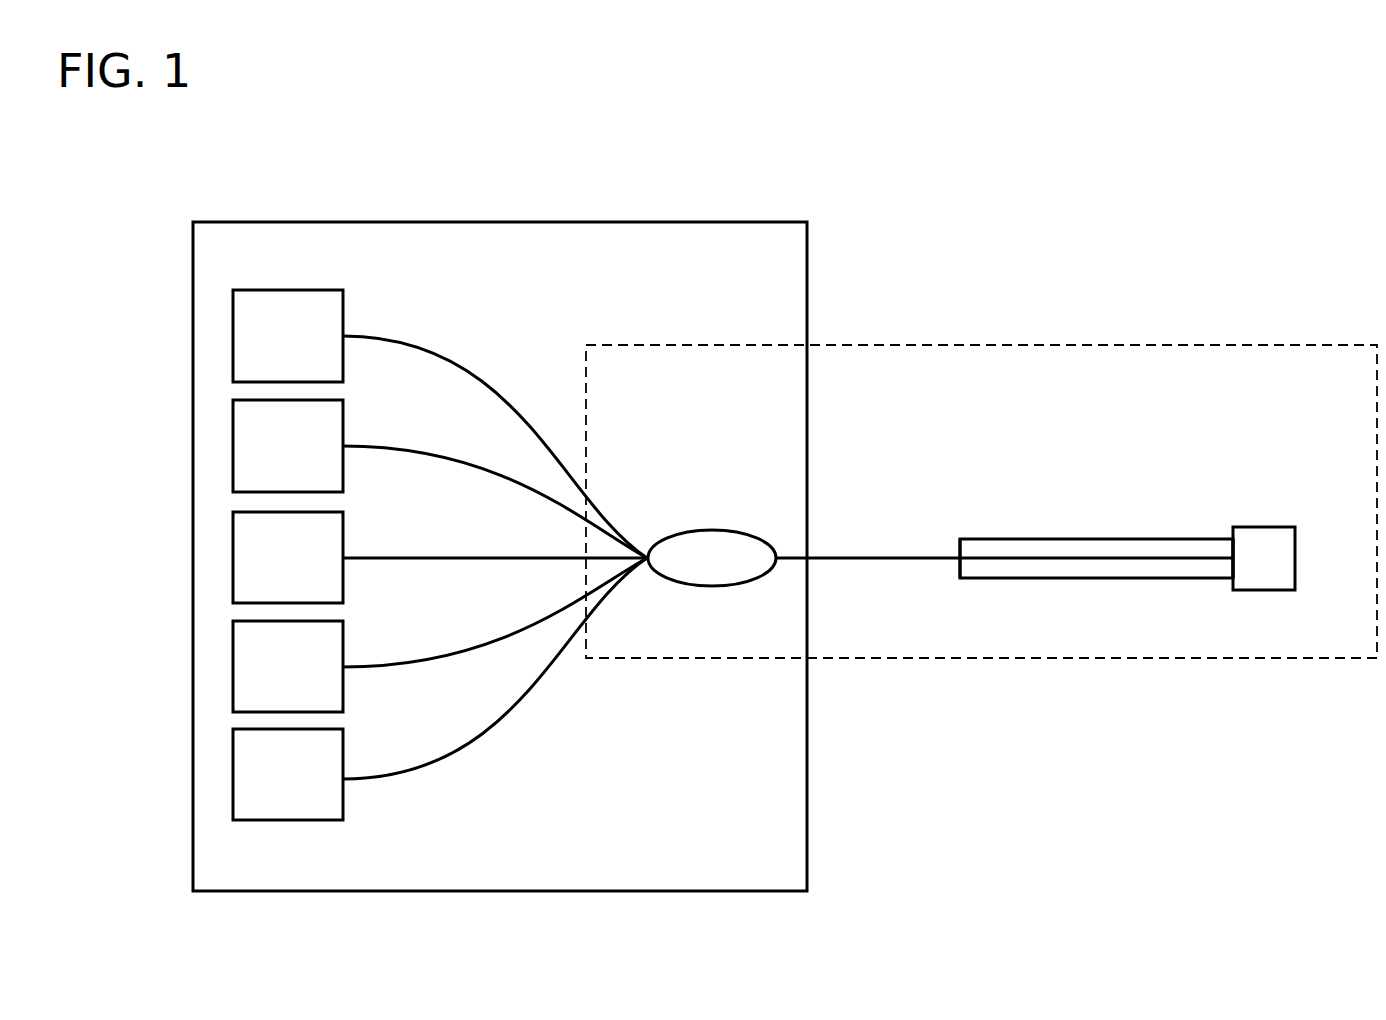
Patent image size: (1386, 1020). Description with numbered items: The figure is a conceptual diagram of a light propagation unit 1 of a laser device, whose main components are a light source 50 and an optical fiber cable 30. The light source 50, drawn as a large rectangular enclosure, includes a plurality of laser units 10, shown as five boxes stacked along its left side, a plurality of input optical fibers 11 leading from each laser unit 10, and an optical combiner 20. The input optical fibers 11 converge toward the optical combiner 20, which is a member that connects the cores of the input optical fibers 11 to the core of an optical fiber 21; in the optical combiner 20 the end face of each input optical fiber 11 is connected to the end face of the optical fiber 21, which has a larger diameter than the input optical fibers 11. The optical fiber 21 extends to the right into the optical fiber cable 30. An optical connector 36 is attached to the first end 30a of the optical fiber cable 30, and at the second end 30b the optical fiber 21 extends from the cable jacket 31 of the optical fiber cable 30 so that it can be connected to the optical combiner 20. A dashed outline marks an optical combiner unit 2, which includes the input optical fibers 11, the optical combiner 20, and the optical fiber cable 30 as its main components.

The light propagation unit 1 is at (1227, 212).
The optical combiner unit 2 is at (988, 345).
The laser unit 10 is at (233, 334).
The input optical fiber 11 is at (378, 335).
The optical combiner 20 is at (713, 530).
The optical fiber 21 is at (845, 556).
The optical fiber cable 30 is at (1122, 506).
The first end 30a is at (1215, 580).
The second end 30b is at (974, 580).
The cable jacket 31 is at (1112, 538).
The optical connector 36 is at (1262, 527).
The light source 50 is at (808, 258).